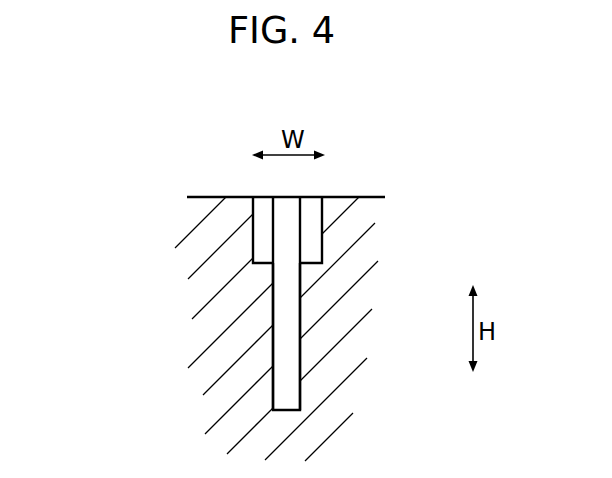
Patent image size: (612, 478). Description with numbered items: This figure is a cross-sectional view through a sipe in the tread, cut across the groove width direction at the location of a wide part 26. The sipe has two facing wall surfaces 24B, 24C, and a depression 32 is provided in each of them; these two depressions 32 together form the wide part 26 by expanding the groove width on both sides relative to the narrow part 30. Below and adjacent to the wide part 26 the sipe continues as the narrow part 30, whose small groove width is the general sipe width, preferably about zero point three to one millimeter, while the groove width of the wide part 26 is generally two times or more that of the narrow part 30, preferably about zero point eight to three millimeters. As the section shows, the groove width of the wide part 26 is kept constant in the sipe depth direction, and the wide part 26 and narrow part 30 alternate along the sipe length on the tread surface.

The wide part 26 is at (263, 197).
The depression 32 is at (254, 244).
The narrow part 30 is at (282, 381).
The wall surface 24B is at (275, 317).
The wall surface 24C is at (302, 345).